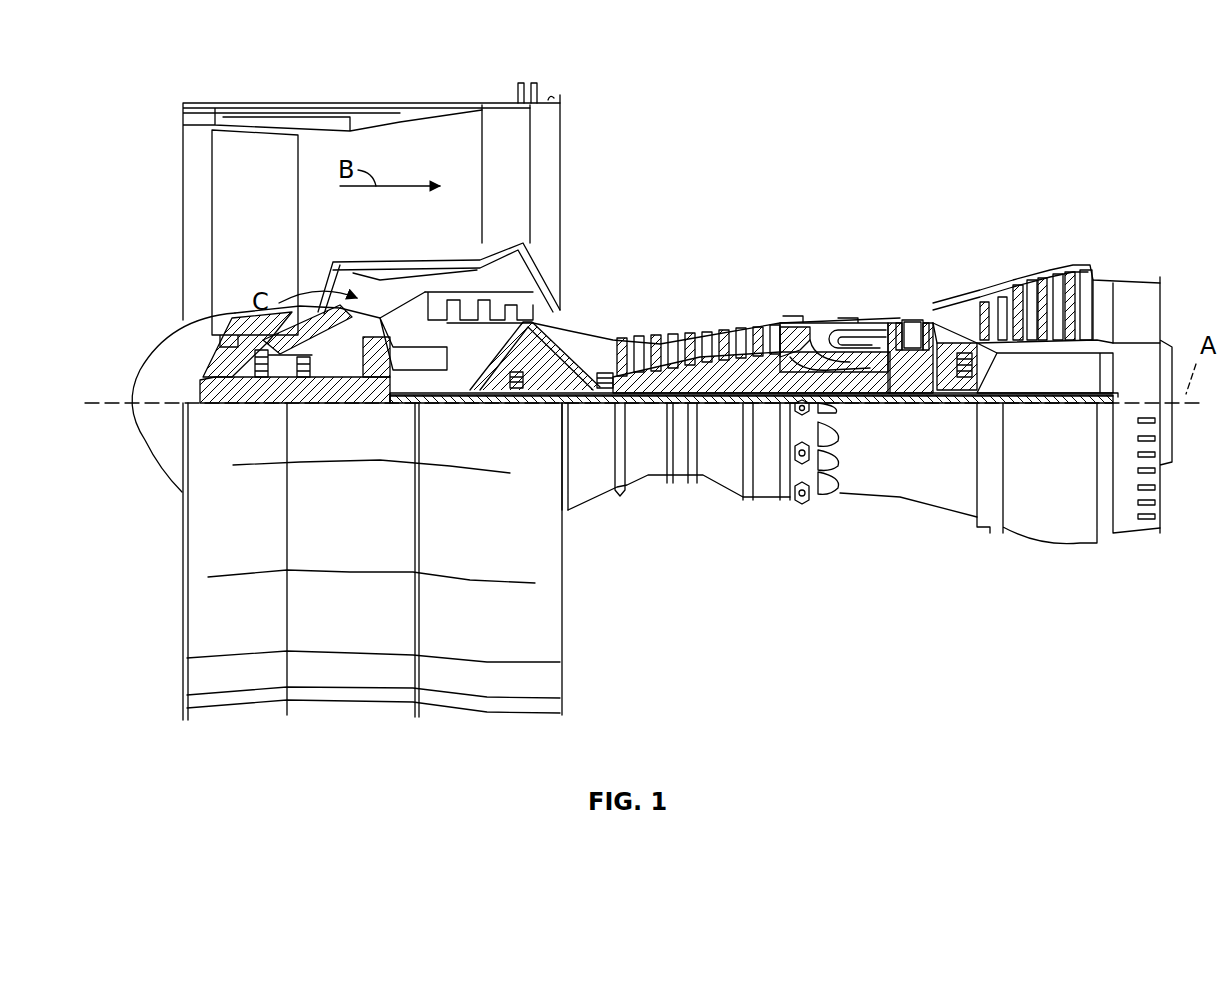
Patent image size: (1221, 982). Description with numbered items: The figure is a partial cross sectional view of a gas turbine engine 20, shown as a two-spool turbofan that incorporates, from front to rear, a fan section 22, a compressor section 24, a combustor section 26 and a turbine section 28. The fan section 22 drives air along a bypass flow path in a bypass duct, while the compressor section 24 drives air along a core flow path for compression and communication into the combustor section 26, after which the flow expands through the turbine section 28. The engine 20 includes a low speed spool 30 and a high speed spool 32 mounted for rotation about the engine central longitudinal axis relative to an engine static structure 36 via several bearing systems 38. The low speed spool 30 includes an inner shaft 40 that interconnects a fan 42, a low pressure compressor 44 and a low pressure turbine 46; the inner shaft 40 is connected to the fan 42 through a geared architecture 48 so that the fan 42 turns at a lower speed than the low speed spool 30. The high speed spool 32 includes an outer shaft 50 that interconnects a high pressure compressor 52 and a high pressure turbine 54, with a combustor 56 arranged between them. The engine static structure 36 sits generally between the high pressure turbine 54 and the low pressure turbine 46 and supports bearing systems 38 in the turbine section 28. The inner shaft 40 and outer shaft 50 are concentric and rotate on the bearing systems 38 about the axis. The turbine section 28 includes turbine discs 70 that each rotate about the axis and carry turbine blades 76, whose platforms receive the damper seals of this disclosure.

The gas turbine engine 20 is at (958, 120).
The fan section 22 is at (310, 88).
The compressor section 24 is at (680, 240).
The combustor section 26 is at (877, 240).
The turbine section 28 is at (990, 240).
The low speed spool 30 is at (733, 413).
The high speed spool 32 is at (782, 365).
The engine static structure 36 is at (767, 507).
The bearing systems 38 is at (260, 378).
The inner shaft 40 is at (580, 403).
The fan 42 is at (255, 238).
The low pressure compressor 44 is at (493, 300).
The low pressure turbine 46 is at (1037, 293).
The geared architecture 48 is at (378, 380).
The outer shaft 50 is at (840, 408).
The high pressure compressor 52 is at (680, 375).
The high pressure turbine 54 is at (910, 318).
The combustor 56 is at (837, 340).
The turbine discs 70 is at (910, 387).
The turbine blades 76 is at (890, 327).